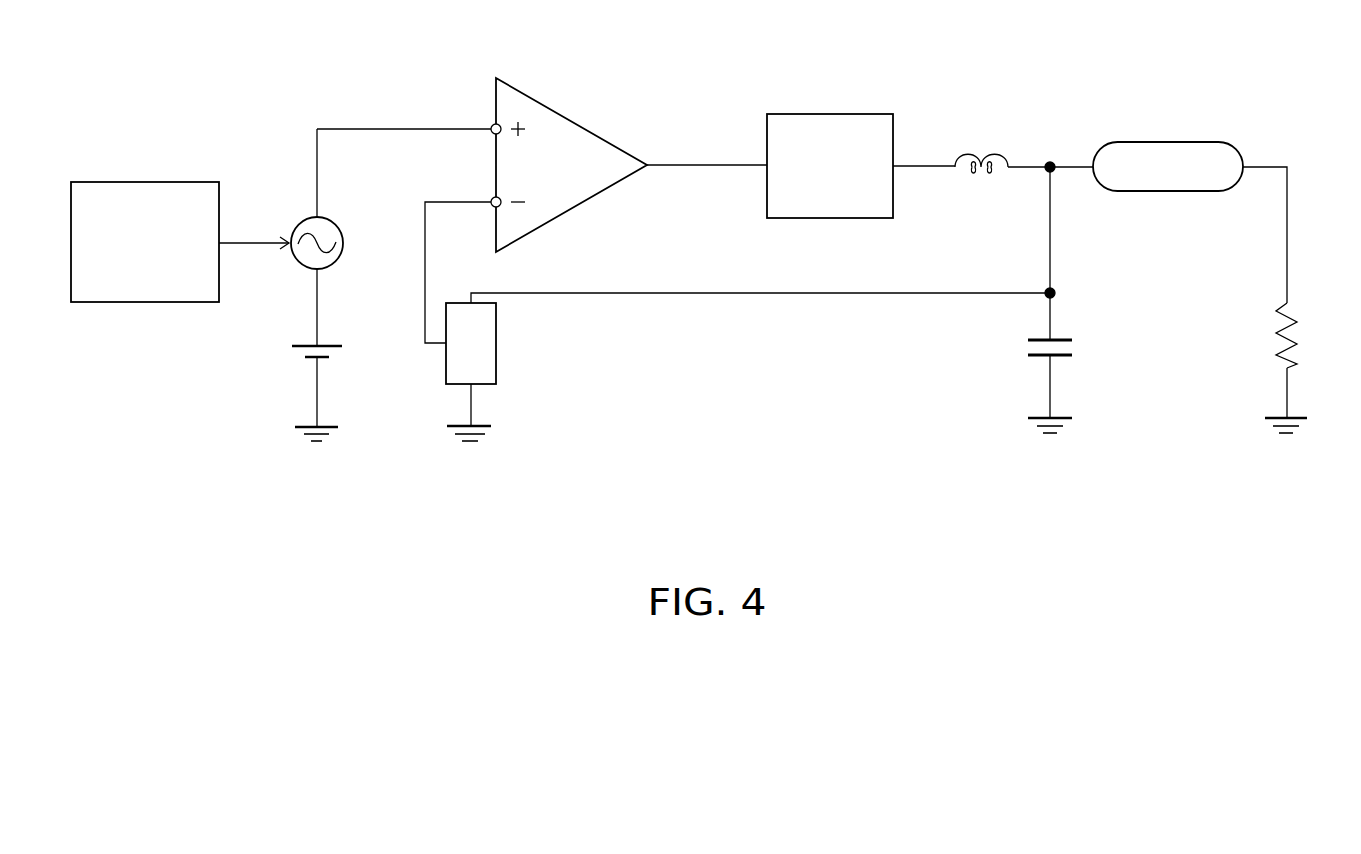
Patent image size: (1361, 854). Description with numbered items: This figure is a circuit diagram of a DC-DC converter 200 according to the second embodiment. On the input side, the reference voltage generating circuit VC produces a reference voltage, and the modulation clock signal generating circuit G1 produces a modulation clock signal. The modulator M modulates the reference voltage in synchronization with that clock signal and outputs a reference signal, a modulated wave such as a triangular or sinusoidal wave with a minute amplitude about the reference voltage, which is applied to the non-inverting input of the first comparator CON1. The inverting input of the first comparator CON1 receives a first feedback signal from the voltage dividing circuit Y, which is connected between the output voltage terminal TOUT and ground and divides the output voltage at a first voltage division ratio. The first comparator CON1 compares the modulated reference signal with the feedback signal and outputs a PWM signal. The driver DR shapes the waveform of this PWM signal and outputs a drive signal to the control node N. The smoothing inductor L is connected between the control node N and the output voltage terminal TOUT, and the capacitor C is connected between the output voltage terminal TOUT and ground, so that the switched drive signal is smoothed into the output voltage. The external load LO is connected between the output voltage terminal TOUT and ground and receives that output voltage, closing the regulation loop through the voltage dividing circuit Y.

The DC-DC converter 200 is at (683, 509).
The modulation clock signal generating circuit G1 is at (146, 181).
The modulator M is at (343, 243).
The reference voltage generating circuit VC is at (342, 346).
The first comparator CON1 is at (572, 118).
The voltage dividing circuit Y is at (496, 343).
The driver DR is at (832, 113).
The control node N is at (925, 160).
The smoothing inductor L is at (980, 153).
The output voltage terminal TOUT is at (1168, 141).
The capacitor C is at (1058, 338).
The external load LO is at (1290, 308).